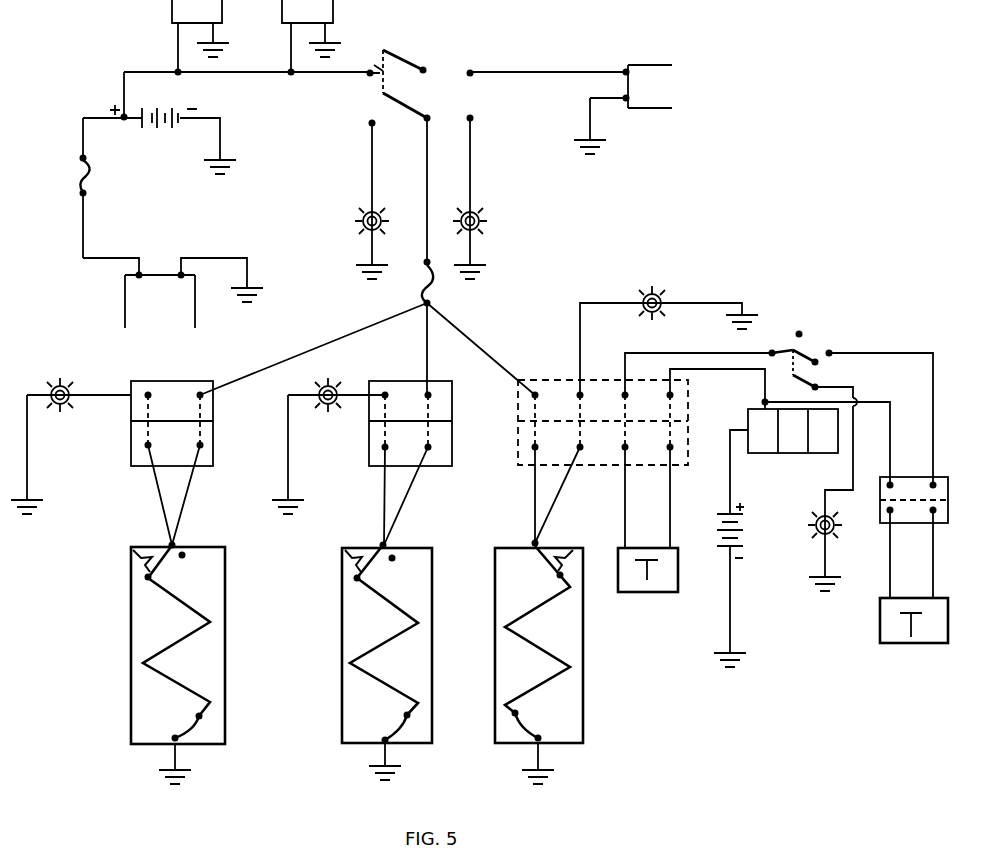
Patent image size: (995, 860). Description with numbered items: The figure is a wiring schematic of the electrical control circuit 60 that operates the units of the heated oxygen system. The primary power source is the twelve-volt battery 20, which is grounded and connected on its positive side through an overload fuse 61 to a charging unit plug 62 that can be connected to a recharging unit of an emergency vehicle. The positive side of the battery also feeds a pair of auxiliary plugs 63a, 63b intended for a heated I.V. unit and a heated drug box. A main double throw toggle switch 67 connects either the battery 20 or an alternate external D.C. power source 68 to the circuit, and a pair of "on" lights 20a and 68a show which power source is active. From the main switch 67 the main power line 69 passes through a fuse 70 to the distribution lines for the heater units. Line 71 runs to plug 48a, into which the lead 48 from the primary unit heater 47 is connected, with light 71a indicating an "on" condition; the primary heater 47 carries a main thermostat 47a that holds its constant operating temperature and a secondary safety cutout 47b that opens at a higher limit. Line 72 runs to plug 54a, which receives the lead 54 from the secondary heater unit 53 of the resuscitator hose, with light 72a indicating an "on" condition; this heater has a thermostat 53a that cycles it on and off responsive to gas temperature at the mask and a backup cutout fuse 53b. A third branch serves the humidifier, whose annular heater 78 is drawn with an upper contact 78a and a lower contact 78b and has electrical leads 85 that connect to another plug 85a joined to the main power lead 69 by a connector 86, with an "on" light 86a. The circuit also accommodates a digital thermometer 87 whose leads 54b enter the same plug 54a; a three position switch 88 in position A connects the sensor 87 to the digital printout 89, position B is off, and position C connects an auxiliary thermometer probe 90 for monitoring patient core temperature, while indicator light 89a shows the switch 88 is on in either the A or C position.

The battery 20 is at (157, 128).
The "on" light 20a is at (361, 220).
The primary unit heater 47 is at (376, 666).
The main sensor control or thermostat 47a is at (354, 568).
The secondary safety cutout 47b is at (398, 732).
The lead 48 is at (407, 507).
The plug 48a is at (452, 410).
The secondary heater unit 53 is at (560, 647).
The main sensor control or thermostat 53a is at (557, 548).
The secondary safety or cutout fuse 53b is at (530, 722).
The lead 54 is at (560, 497).
The plug 54a is at (559, 380).
The leads 54b is at (627, 496).
The electrical control circuit 60 is at (663, 223).
The overload fuse 61 is at (78, 178).
The charging unit plug 62 is at (125, 297).
The auxiliary plug 63a is at (172, 10).
The auxiliary plug 63b is at (333, 12).
The main double throw toggle switch 67 is at (403, 56).
The alternate external D.C. power source 68 is at (641, 65).
The "on" light 68a is at (481, 212).
The main power line 69 is at (427, 174).
The fuse 70 is at (435, 289).
The line 71 is at (426, 351).
The light 71a is at (334, 406).
The line 72 is at (470, 341).
The light 72a is at (664, 294).
The annular heater 78 is at (158, 666).
The heater upper contact 78a is at (143, 568).
The heater lower contact 78b is at (185, 735).
The electrical leads 85 is at (182, 500).
The plug 85a is at (166, 381).
The connector 86 is at (330, 341).
The "on" light 86a is at (70, 378).
The digital thermometer 87 is at (645, 592).
The three position switch 88 is at (806, 349).
The digital printout 89 is at (810, 453).
The indicator light 89a is at (814, 532).
The auxiliary thermometer probe 90 is at (880, 625).